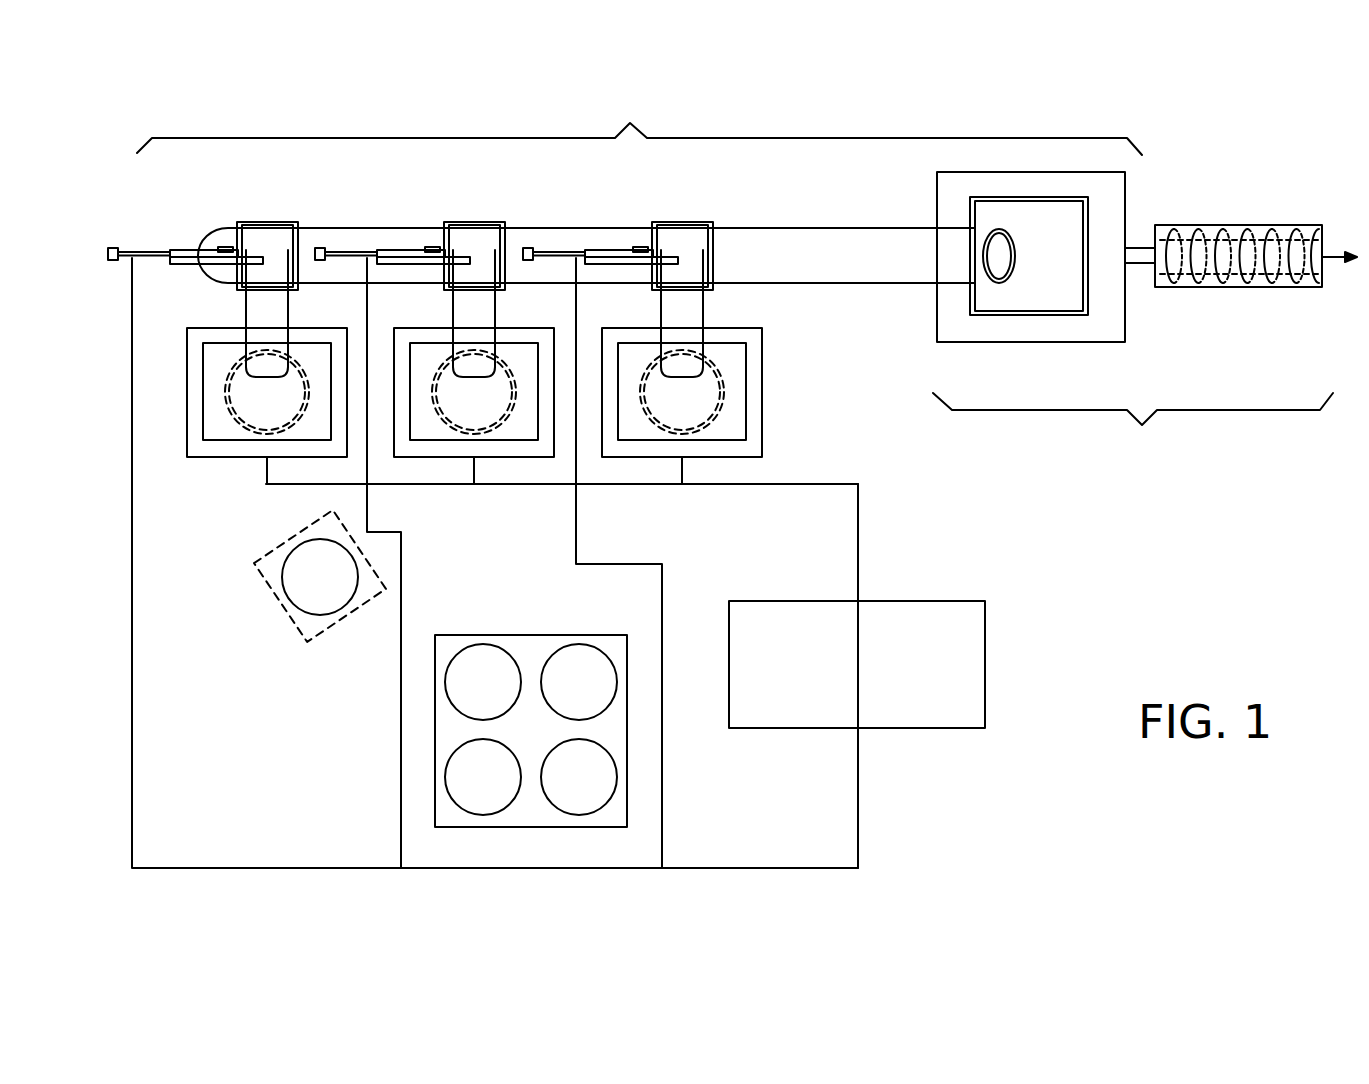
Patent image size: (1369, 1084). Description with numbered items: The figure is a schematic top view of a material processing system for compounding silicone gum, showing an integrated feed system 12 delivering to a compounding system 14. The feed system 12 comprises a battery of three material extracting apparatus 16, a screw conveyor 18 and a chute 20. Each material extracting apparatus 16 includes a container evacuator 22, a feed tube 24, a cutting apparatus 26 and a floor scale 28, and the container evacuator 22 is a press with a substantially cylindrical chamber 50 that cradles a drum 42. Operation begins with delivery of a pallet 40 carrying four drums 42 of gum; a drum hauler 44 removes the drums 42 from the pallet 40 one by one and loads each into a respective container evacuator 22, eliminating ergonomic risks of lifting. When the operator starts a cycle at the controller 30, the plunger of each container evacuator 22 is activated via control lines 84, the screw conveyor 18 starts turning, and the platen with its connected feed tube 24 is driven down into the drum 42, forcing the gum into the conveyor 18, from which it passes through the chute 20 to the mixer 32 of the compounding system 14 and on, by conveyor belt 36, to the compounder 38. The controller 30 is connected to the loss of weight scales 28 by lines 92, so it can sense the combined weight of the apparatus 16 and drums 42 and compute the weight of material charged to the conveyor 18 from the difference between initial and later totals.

The feed system 12 is at (639, 125).
The compounding system 14 is at (1133, 423).
The material extracting apparatus 16 is at (472, 391).
The conveyor 18 is at (800, 228).
The chute 20 is at (970, 203).
The container evacuator 22 is at (217, 440).
The feed tube 24 is at (288, 306).
The cutting apparatus 26 is at (178, 250).
The floor scale 28 is at (187, 393).
The controller 30 is at (985, 643).
The mixer 32 is at (1005, 342).
The conveyor belt 36 is at (1137, 248).
The compounder 38 is at (1238, 225).
The pallet 40 is at (435, 707).
The drum 42 is at (252, 432).
The drum hauler 44 is at (302, 638).
The chamber 50 is at (237, 362).
The control lines 84 is at (132, 396).
The lines 92 is at (858, 510).